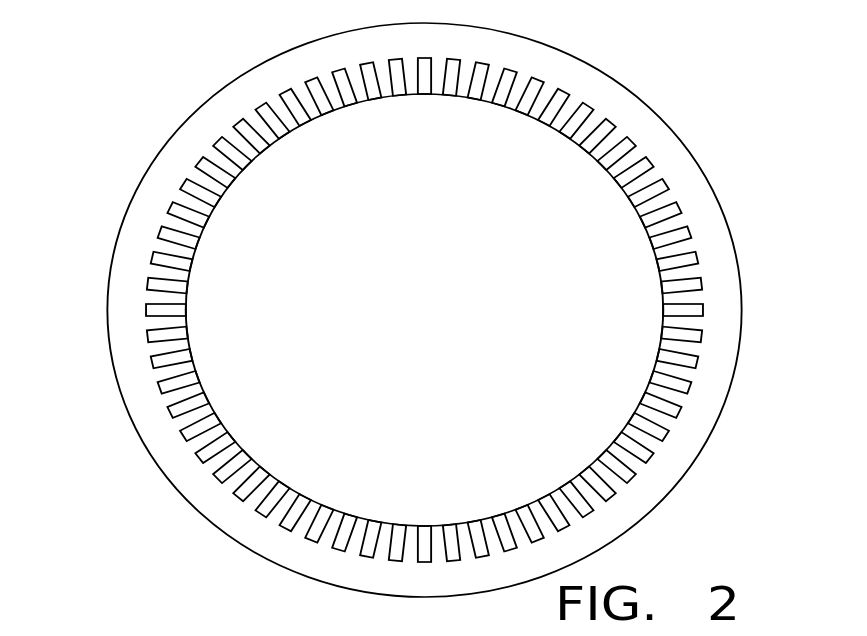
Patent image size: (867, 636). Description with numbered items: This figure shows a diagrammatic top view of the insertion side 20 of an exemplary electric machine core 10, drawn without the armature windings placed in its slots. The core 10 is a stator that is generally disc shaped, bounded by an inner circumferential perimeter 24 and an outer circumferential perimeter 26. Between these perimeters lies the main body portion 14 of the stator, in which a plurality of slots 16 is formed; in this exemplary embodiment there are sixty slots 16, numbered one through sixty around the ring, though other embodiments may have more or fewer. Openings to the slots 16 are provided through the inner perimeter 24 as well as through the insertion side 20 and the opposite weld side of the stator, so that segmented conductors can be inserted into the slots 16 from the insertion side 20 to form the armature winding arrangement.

The electric machine core 10 is at (645, 75).
The main body portion 14 is at (675, 153).
The slots 16 is at (678, 228).
The insertion side 20 is at (206, 113).
The inner circumferential perimeter 24 is at (363, 523).
The outer circumferential perimeter 26 is at (653, 512).